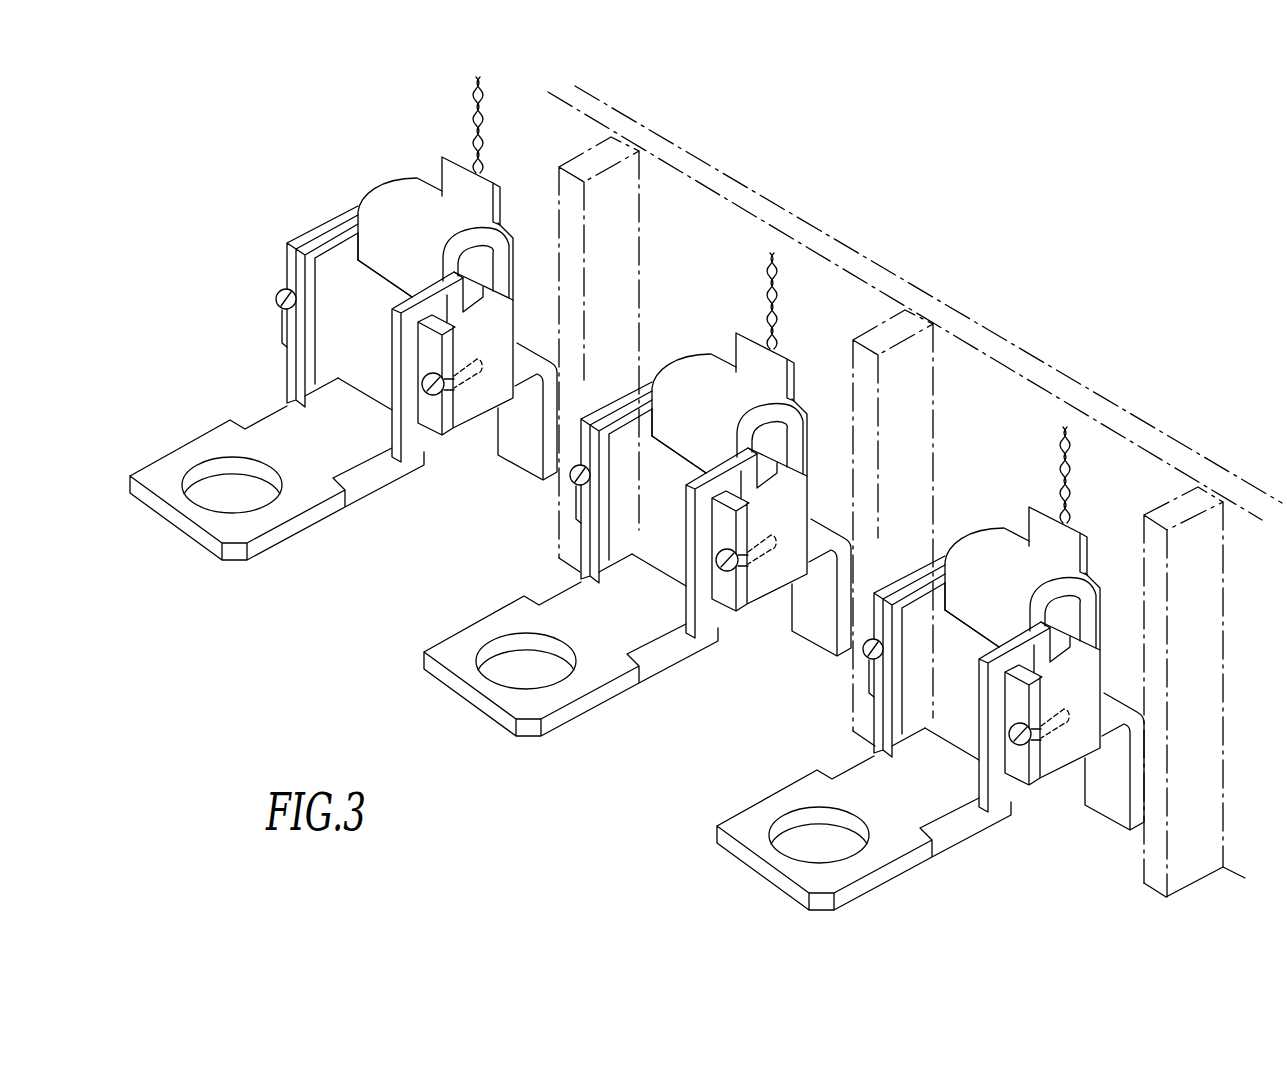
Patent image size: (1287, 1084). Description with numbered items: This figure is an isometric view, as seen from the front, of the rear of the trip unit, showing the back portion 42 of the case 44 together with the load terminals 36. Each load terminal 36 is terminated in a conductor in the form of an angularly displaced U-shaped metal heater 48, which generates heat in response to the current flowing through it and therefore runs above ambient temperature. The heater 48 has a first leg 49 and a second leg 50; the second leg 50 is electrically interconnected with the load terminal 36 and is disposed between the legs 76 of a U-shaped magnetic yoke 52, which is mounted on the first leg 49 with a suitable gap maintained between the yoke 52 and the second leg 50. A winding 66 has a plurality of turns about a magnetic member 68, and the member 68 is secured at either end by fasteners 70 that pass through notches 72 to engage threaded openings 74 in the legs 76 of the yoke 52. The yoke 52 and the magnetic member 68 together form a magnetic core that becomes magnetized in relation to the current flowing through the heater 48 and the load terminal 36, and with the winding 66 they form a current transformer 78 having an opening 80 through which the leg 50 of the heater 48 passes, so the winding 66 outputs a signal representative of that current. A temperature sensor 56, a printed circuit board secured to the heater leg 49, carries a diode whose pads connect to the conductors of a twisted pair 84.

The load terminal 36 is at (175, 533).
The back portion 42 is at (620, 237).
The case 44 is at (1053, 360).
The U-shaped metal heater 48 is at (406, 198).
The first leg 49 is at (500, 257).
The second leg 50 is at (368, 238).
The U-shaped magnetic yoke 52 is at (522, 310).
The temperature sensor 56 is at (455, 178).
The winding 66 is at (353, 382).
The magnetic member 68 is at (410, 443).
The fastener 70 is at (273, 307).
The notch 72 is at (447, 433).
The threaded opening 74 is at (466, 380).
The leg 76 is at (493, 414).
The current transformer 78 is at (373, 283).
The opening 80 is at (350, 252).
The twisted pair 84 is at (474, 107).